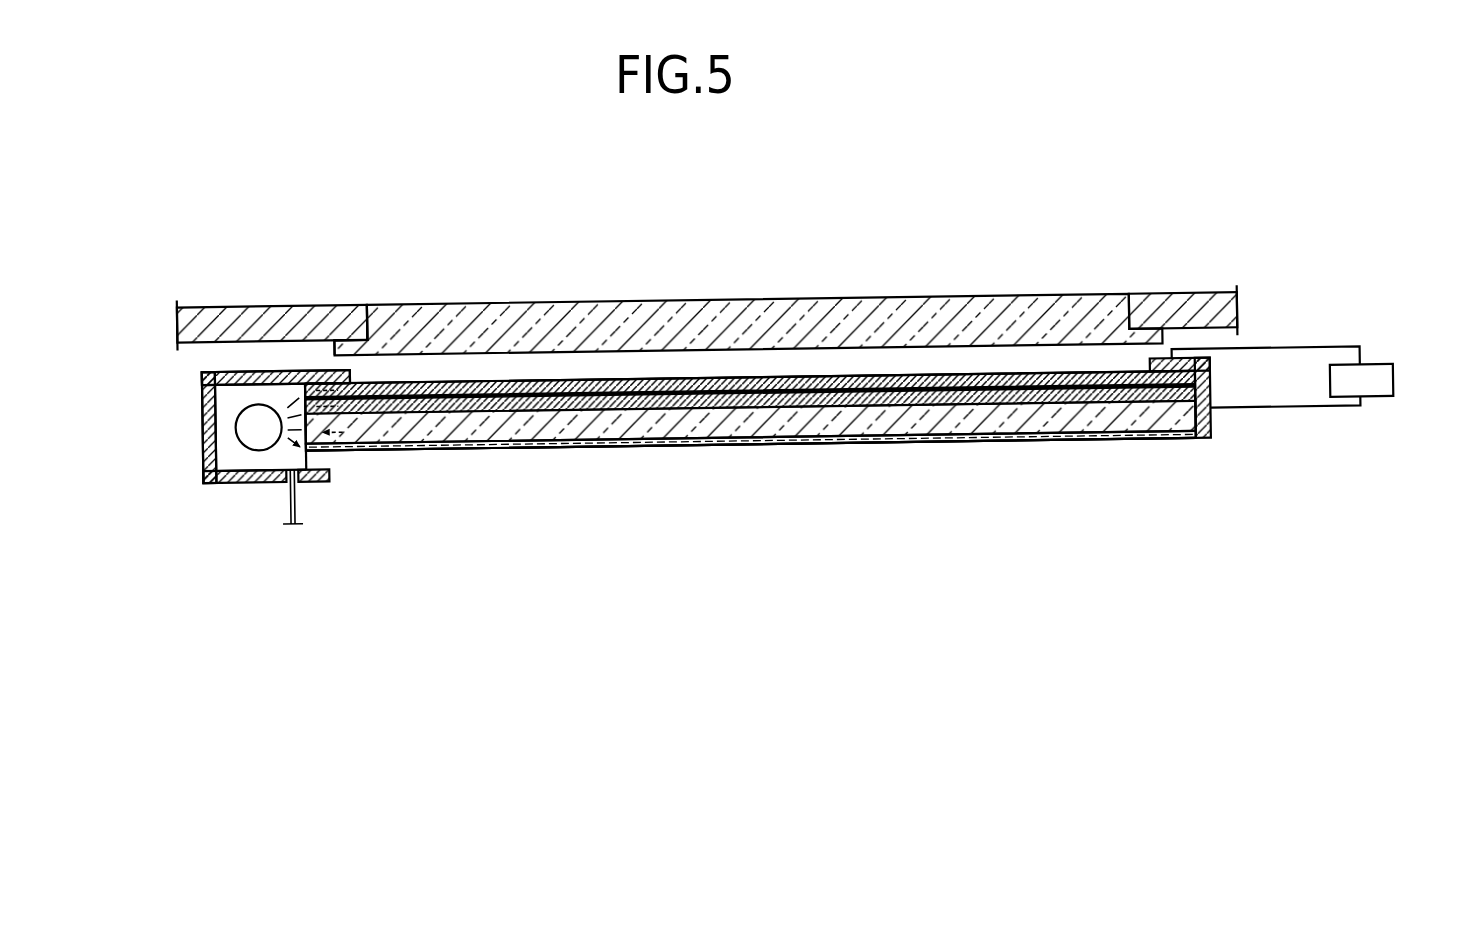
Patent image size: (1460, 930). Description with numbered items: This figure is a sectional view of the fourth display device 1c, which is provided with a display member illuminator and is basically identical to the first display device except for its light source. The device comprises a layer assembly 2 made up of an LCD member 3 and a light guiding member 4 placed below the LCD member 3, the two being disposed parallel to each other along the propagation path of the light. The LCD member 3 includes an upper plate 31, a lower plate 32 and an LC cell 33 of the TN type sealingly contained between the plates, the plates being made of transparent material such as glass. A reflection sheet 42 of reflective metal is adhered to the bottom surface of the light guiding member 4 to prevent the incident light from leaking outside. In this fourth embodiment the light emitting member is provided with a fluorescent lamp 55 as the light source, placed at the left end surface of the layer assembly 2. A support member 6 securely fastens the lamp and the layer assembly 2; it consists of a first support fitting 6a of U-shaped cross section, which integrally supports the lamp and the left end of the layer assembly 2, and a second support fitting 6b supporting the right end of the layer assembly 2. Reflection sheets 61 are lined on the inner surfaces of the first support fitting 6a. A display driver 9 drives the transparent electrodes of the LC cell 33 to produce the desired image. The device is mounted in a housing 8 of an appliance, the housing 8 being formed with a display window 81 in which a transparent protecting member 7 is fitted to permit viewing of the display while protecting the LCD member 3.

The fourth display device 1c is at (980, 370).
The layer assembly 2 is at (781, 486).
The LCD member 3 is at (754, 476).
The upper plate 31 is at (1098, 438).
The LC cell 33 is at (1073, 438).
The lower plate 32 is at (1045, 438).
The light guiding member 4 is at (1018, 438).
The reflection sheet 42 is at (542, 452).
The fluorescent lamp 55 is at (258, 428).
The support member 6 is at (232, 482).
The first support fitting 6a is at (222, 483).
The second support fitting 6b is at (1210, 410).
The reflection sheets 61 is at (243, 371).
The protecting member 7 is at (587, 307).
The housing 8 is at (302, 307).
The display window 81 is at (390, 308).
The display driver 9 is at (1393, 370).